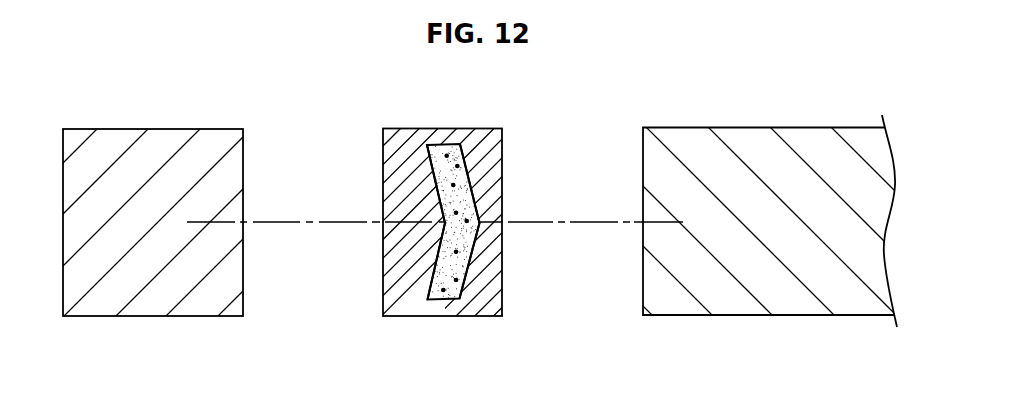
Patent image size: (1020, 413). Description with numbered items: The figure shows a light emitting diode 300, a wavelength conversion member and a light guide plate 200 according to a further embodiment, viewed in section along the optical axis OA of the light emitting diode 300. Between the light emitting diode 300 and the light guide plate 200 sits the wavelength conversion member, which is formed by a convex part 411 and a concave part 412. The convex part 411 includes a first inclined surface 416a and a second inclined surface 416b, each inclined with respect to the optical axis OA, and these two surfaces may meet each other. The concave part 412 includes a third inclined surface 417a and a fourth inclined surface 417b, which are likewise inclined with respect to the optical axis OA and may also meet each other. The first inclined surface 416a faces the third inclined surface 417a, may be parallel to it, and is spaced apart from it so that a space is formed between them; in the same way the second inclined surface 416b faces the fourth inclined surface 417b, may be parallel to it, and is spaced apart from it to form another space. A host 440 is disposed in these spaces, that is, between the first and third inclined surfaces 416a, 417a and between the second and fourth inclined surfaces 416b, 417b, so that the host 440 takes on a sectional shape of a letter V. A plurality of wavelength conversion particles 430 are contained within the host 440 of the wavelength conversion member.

The lens module 200 is at (771, 287).
The light emitting diode 300 is at (150, 290).
The convex part 411 is at (392, 253).
The concave part 412 is at (491, 252).
The first inclined surface 416a is at (431, 173).
The second inclined surface 416b is at (435, 255).
The third inclined surface 417a is at (466, 174).
The fourth inclined surface 417b is at (466, 270).
The wavelength conversion particles 430 is at (443, 292).
The host 440 is at (456, 144).
The optical axis OA is at (435, 208).